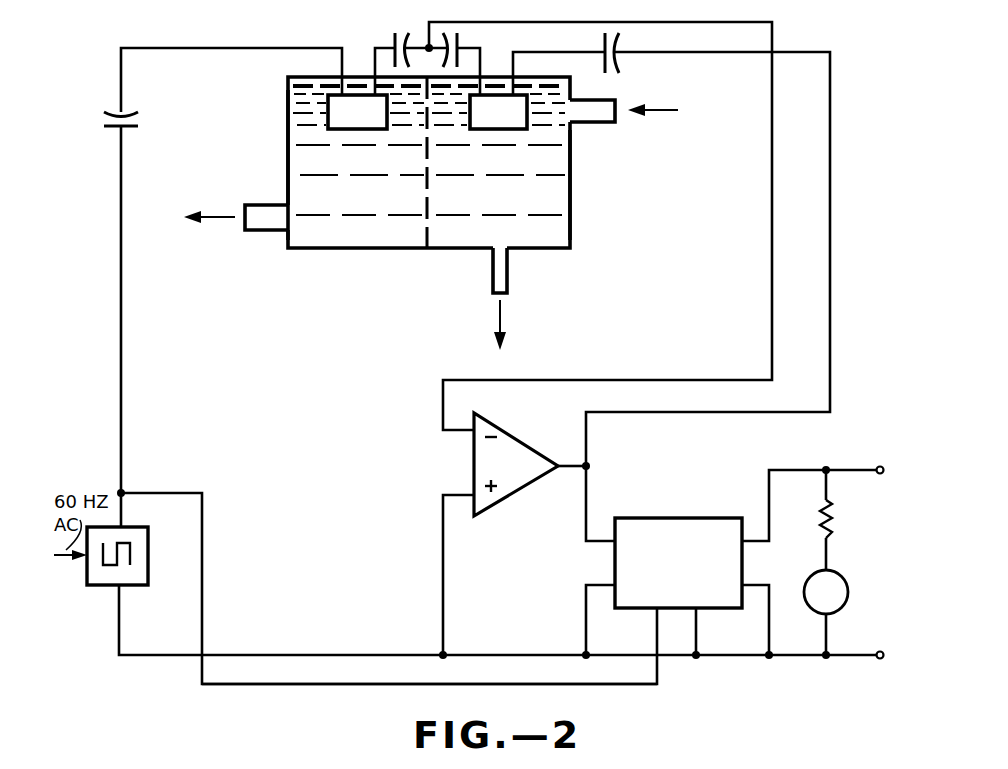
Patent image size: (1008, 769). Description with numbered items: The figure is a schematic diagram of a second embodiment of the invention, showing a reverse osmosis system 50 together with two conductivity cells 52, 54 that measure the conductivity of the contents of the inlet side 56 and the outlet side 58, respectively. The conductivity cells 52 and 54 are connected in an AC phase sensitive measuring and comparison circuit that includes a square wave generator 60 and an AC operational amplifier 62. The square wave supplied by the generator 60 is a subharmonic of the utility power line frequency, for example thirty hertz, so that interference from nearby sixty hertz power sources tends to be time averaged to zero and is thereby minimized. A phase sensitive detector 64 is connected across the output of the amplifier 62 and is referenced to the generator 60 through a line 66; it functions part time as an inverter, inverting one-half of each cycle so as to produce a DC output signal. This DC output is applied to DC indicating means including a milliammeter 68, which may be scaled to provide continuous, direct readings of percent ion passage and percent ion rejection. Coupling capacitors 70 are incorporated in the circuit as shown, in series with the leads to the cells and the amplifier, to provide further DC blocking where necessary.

The reverse osmosis system 50 is at (345, 266).
The conductivity cell 52 is at (514, 82).
The conductivity cell 54 is at (342, 82).
The inlet side 56 is at (570, 157).
The outlet side 58 is at (288, 152).
The square wave generator 60 is at (149, 538).
The AC operational amplifier 62 is at (511, 435).
The phase sensitive detector 64 is at (641, 517).
The line 66 is at (614, 688).
The milliammeter 68 is at (849, 589).
The coupling capacitors 70 is at (128, 118).